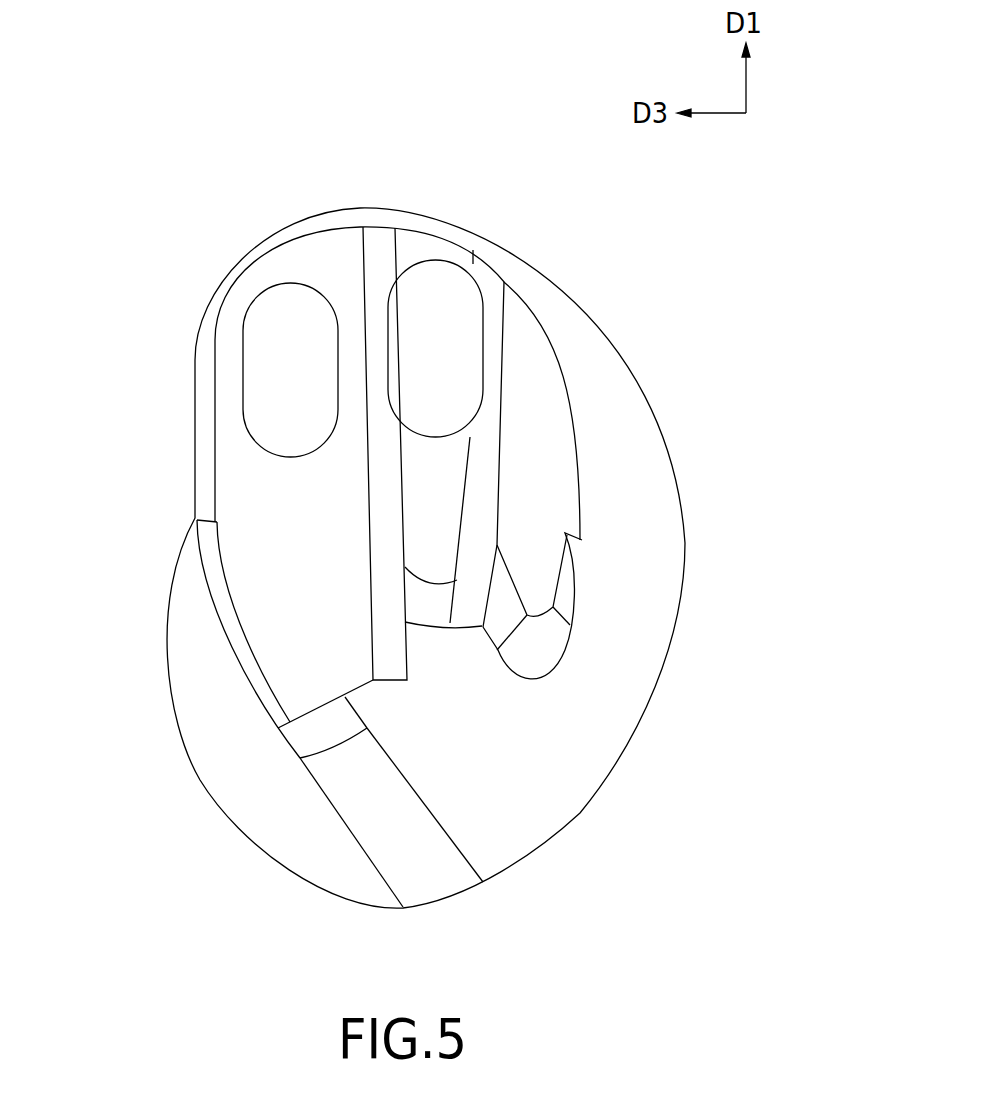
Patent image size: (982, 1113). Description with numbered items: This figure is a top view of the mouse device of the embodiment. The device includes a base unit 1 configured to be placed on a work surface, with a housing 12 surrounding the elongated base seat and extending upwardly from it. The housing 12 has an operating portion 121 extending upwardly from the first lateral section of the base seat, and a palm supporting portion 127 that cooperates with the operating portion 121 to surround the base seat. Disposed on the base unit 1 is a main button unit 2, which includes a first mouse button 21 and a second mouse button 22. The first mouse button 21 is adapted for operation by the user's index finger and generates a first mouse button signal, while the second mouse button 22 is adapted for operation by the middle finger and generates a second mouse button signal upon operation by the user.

The base unit 1 is at (195, 432).
The housing 12 is at (306, 492).
The operating portion 121 is at (197, 482).
The palm supporting portion 127 is at (593, 716).
The main button unit 2 is at (285, 310).
The first mouse button 21 is at (291, 328).
The second mouse button 22 is at (432, 290).